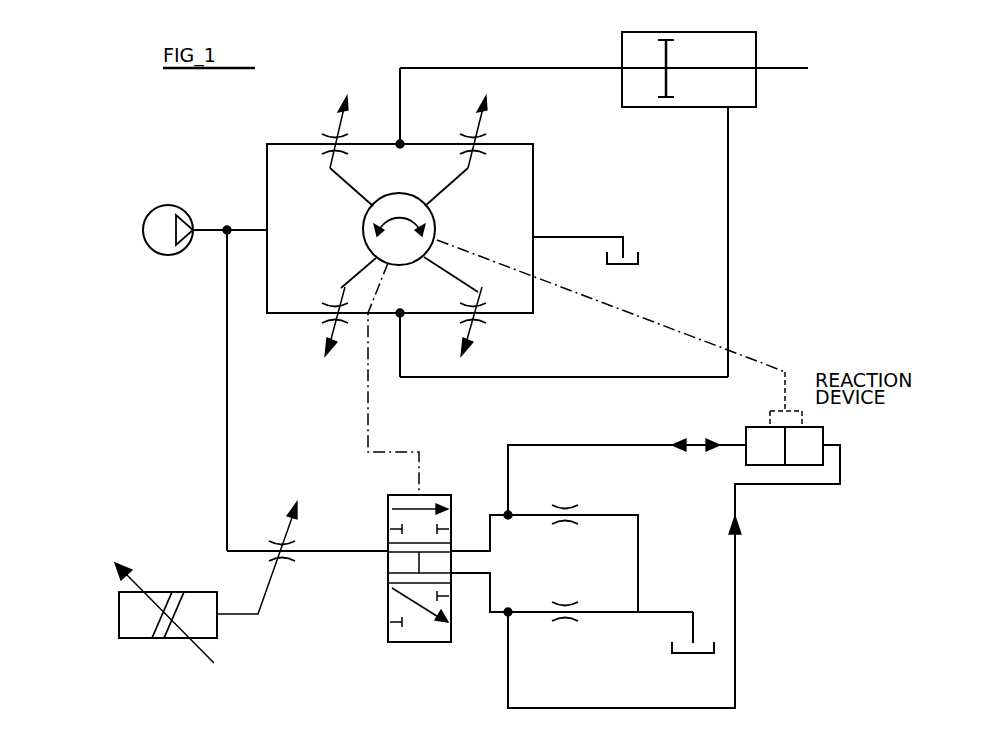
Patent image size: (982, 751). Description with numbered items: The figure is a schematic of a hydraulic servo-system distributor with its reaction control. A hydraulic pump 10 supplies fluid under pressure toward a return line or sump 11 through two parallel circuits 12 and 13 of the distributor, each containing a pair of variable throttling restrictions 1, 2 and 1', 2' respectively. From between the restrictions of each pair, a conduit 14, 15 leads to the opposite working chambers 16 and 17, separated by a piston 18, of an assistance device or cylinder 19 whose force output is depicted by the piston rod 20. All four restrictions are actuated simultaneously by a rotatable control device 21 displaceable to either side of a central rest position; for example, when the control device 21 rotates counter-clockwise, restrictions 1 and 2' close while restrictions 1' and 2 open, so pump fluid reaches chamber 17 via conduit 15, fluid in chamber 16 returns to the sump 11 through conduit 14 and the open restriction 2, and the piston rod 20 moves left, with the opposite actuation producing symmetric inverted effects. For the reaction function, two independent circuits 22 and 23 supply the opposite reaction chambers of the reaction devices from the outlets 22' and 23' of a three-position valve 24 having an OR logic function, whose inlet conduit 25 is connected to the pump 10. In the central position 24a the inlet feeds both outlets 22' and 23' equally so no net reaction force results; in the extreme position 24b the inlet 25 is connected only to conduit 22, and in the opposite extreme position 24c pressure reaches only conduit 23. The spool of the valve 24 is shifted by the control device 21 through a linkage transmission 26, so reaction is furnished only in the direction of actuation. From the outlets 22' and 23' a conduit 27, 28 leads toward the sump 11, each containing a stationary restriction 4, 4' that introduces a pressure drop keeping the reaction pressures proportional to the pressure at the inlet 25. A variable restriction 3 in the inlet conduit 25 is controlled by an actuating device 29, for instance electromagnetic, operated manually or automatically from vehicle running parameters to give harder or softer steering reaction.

The variable throttling restriction 1 is at (337, 121).
The variable throttling restriction 2 is at (481, 123).
The variable throttling restriction 1' is at (330, 316).
The variable throttling restriction 2' is at (484, 316).
The variable restriction 3 is at (257, 556).
The stationary restriction 4 is at (565, 524).
The stationary restriction 4' is at (565, 600).
The hydraulic pump 10 is at (152, 246).
The return line or sump 11 is at (623, 450).
The parallel circuit 12 is at (427, 144).
The parallel circuit 13 is at (430, 316).
The conduit 14 is at (566, 68).
The conduit 15 is at (564, 365).
The working chamber 16 is at (644, 69).
The working chamber 17 is at (728, 225).
The piston 18 is at (669, 52).
The assistance device or cylinder 19 is at (718, 32).
The piston rod 20 is at (782, 68).
The control device 21 is at (411, 255).
The independent circuit 22 is at (605, 479).
The independent circuit 23 is at (654, 576).
The valve outlet 22' is at (479, 533).
The valve outlet 23' is at (479, 592).
The three-position valve 24 is at (412, 652).
The central position 24a is at (388, 562).
The extreme position 24b is at (388, 516).
The extreme position 24c is at (388, 610).
The inlet conduit 25 is at (307, 539).
The linkage transmission 26 is at (366, 398).
The conduit 27 is at (574, 550).
The conduit 28 is at (598, 601).
The actuating device 29 is at (166, 613).